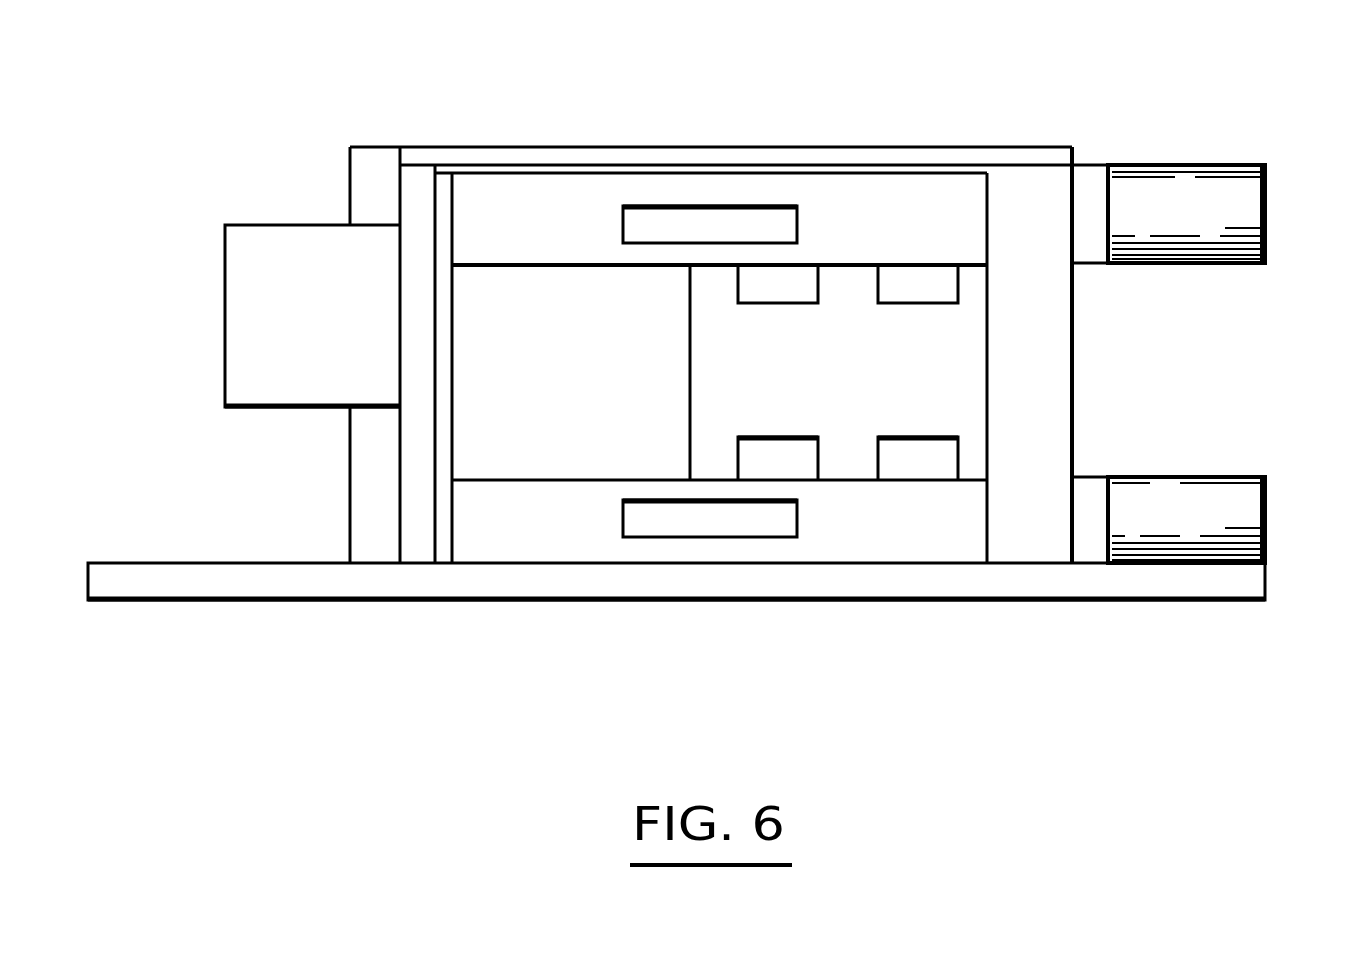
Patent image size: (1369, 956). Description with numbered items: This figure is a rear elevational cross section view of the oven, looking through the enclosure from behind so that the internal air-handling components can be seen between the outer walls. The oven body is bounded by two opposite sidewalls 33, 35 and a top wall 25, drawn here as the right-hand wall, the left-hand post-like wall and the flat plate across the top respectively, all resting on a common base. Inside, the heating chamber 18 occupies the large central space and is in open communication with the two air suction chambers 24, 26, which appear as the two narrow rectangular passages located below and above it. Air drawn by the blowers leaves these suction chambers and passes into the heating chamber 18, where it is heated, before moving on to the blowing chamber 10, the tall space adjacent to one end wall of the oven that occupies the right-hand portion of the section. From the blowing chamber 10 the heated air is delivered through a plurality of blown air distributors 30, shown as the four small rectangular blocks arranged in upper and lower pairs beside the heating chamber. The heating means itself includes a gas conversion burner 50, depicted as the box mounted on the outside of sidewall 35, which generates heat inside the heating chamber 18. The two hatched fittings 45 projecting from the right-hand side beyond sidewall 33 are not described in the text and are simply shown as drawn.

The blowing chamber 10 is at (940, 355).
The heating chamber 18 is at (576, 402).
The air suction chamber 24 is at (712, 537).
The top wall 25 is at (560, 146).
The air suction chamber 26 is at (703, 206).
The blown air distributors 30 is at (897, 298).
The sidewall 33 is at (1078, 185).
The sidewall 35 is at (366, 182).
The threaded terminal fittings 45 is at (1258, 190).
The gas conversion burner 50 is at (248, 375).